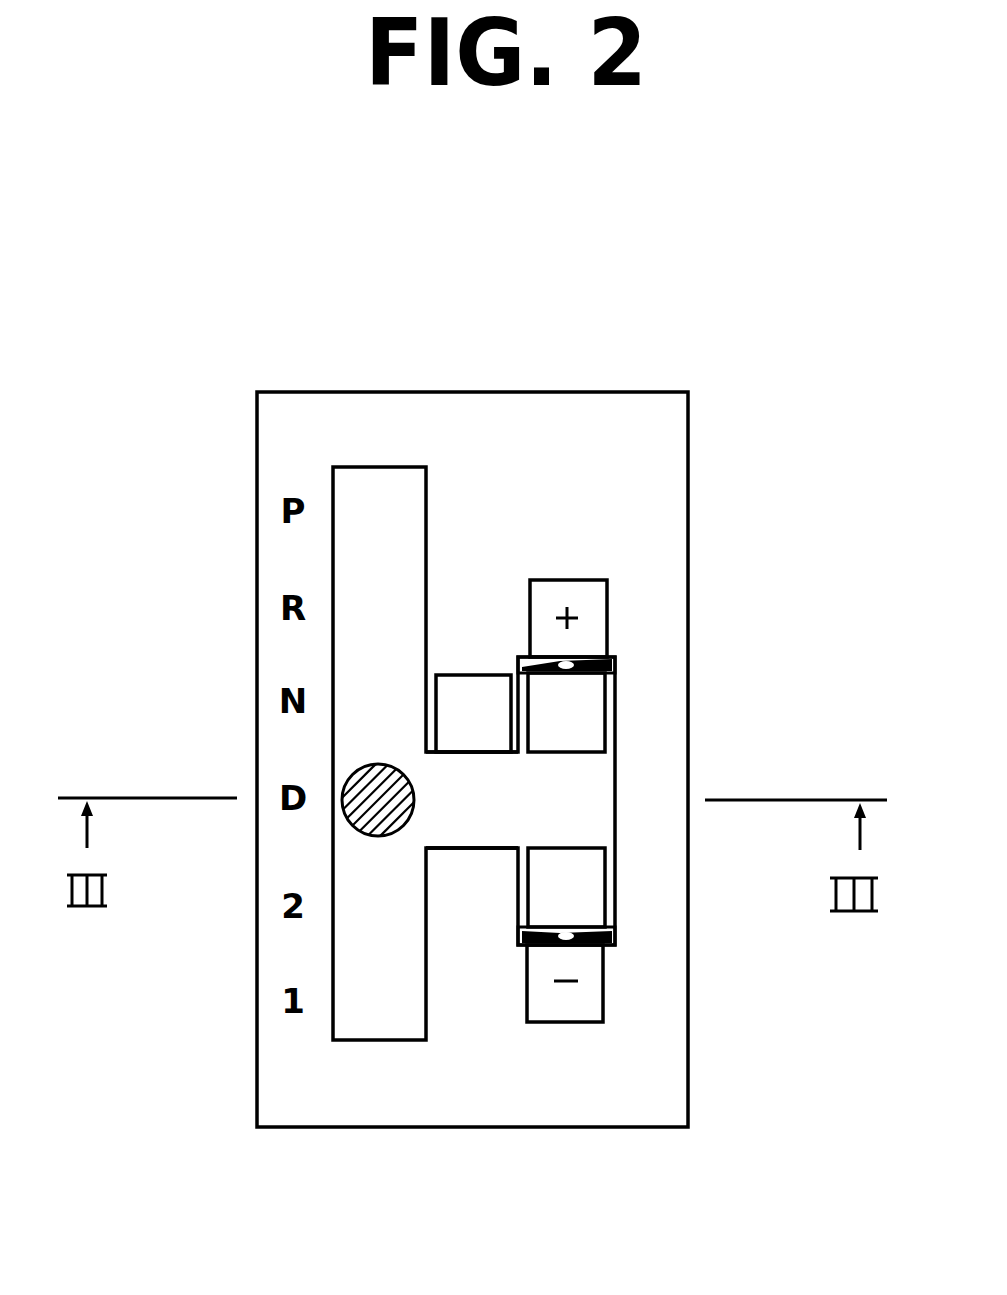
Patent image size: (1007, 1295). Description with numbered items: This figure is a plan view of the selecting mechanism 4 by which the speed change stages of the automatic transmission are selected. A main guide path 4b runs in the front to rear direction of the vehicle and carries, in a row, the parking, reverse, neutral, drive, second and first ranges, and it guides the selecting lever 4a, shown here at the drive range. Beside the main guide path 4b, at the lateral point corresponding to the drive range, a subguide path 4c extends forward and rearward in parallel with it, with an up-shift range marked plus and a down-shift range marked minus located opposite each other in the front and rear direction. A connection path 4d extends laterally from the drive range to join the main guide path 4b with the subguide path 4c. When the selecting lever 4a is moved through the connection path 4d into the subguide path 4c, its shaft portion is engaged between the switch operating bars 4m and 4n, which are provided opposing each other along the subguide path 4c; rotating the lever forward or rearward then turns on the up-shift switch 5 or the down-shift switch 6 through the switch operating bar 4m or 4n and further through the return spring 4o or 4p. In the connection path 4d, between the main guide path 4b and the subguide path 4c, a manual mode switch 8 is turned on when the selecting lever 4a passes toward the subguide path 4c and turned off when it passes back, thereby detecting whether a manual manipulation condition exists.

The selecting mechanism 4 is at (652, 362).
The selecting lever 4a is at (352, 828).
The main guide path 4b is at (335, 648).
The subguide path 4c is at (613, 765).
The connection path 4d is at (482, 842).
The switch operating bar 4m is at (597, 700).
The switch operating bar 4n is at (595, 887).
The return spring 4o is at (598, 670).
The return spring 4p is at (607, 933).
The up-shift switch 5 is at (605, 617).
The down-shift switch 6 is at (605, 982).
The manual mode switch 8 is at (475, 675).